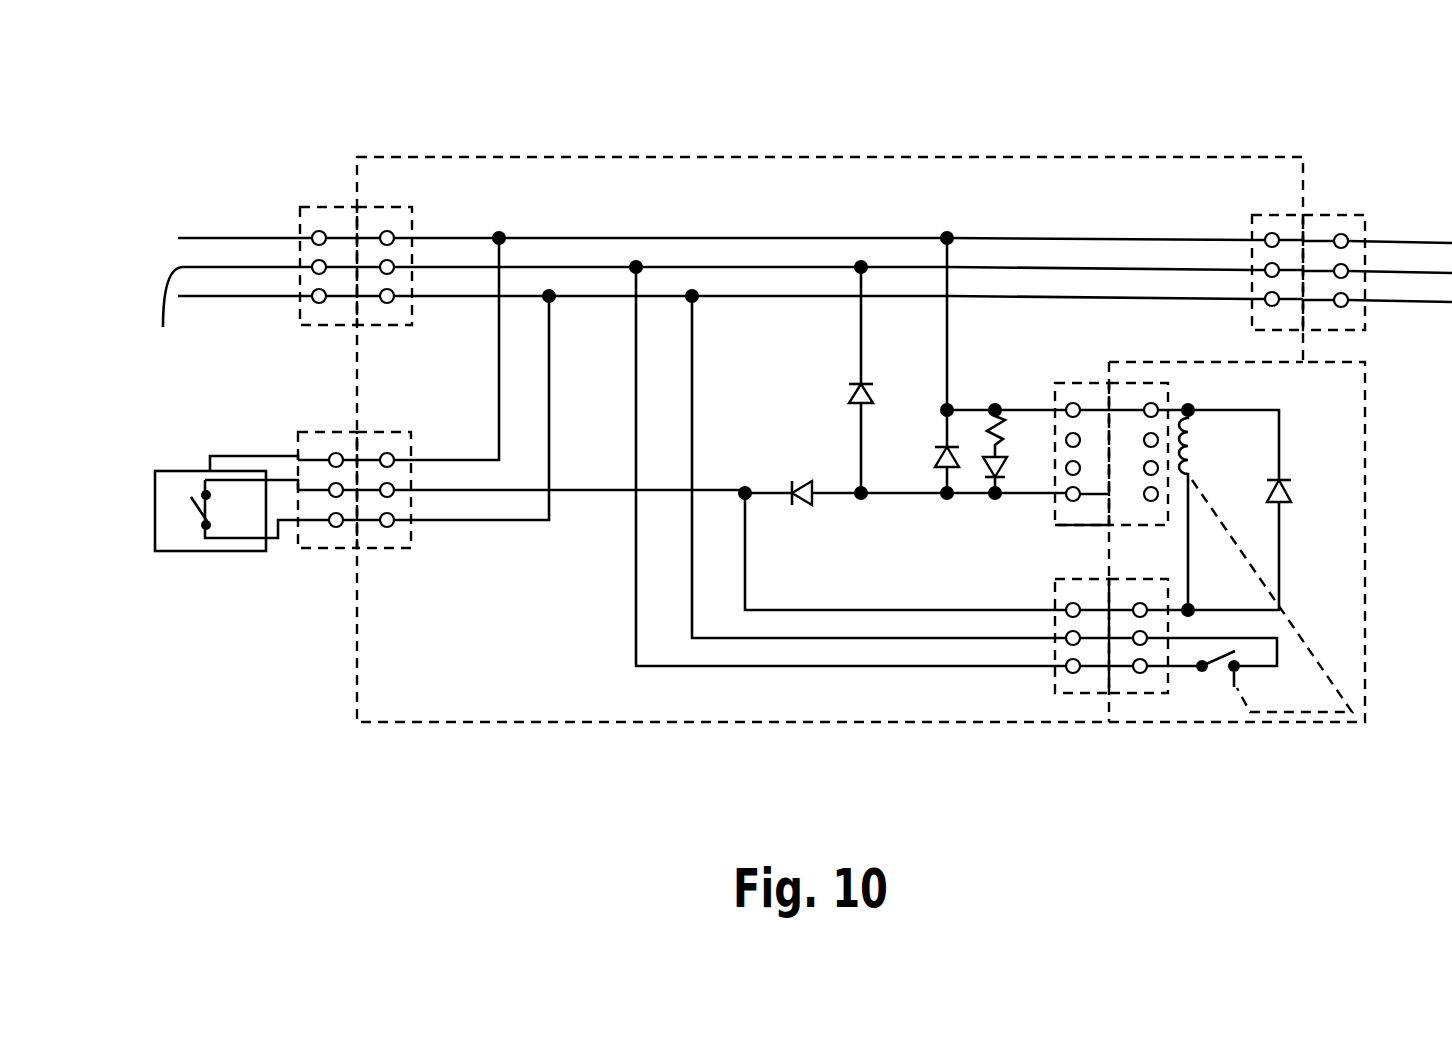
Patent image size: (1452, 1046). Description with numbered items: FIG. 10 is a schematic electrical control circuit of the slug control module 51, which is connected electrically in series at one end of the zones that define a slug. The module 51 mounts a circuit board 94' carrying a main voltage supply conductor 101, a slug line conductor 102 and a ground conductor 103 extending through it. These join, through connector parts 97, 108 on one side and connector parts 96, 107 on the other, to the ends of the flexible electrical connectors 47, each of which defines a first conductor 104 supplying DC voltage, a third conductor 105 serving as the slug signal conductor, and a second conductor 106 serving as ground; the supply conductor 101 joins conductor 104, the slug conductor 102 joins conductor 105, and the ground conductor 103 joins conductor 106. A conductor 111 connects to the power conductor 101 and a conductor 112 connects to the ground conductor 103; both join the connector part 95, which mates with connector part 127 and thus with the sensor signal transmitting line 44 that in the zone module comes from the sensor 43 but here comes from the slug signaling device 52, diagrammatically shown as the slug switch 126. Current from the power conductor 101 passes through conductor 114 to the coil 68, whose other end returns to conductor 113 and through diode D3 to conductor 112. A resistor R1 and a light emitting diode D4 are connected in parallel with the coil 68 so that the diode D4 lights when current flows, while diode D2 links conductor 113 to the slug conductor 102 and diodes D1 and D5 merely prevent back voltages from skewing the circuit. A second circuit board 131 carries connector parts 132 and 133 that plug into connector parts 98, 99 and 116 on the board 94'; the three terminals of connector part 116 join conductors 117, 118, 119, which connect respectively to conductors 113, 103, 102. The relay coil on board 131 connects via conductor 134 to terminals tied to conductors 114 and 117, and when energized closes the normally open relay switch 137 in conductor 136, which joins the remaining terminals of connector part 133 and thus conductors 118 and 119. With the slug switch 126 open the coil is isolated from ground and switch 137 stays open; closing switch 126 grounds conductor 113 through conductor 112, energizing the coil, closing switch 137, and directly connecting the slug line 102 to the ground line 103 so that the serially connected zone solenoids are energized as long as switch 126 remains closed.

The slug control module 51 is at (968, 140).
The second circuit board 131 is at (1338, 541).
The circuit board 94' is at (820, 146).
The electrical connector 47 is at (190, 226).
The first conductor 104 is at (218, 236).
The third conductor 105 is at (277, 312).
The second conductor 106 is at (212, 297).
The connector part 108 is at (320, 205).
The connector part 97 is at (372, 205).
The main voltage supply conductor 101 is at (648, 236).
The slug line conductor 102 is at (725, 265).
The ground conductor 103 is at (797, 294).
The connector part 96 is at (1275, 213).
The connector part 107 is at (1325, 213).
The sensor 43 is at (176, 460).
The slug switch 126 is at (195, 522).
The sensor signal transmitting line 44 is at (241, 446).
The slug signaling device 52 is at (220, 566).
The plug connector 127 is at (322, 435).
The connector part 95 is at (385, 435).
The conductor 111 is at (498, 380).
The conductor 112 is at (552, 390).
The conductor 113 is at (582, 490).
The conductor 114 is at (948, 335).
The diode D1 is at (935, 462).
The diode D2 is at (847, 395).
The diode D3 is at (810, 480).
The light emitting diode D4 is at (1003, 465).
The diode D5 is at (1292, 487).
The resistor R1 is at (988, 430).
The receptacle connector 99 is at (1072, 381).
The connector part 132 is at (1152, 406).
The connector part 98 is at (1072, 515).
The solenoid coil 68 is at (1193, 437).
The conductor 134 is at (1200, 558).
The connector part 116 is at (1072, 695).
The connector part 133 is at (1133, 695).
The conductor 117 is at (873, 607).
The conductor 118 is at (790, 636).
The conductor 119 is at (890, 667).
The relay switch 137 is at (1217, 668).
The conductor 136 is at (1260, 670).